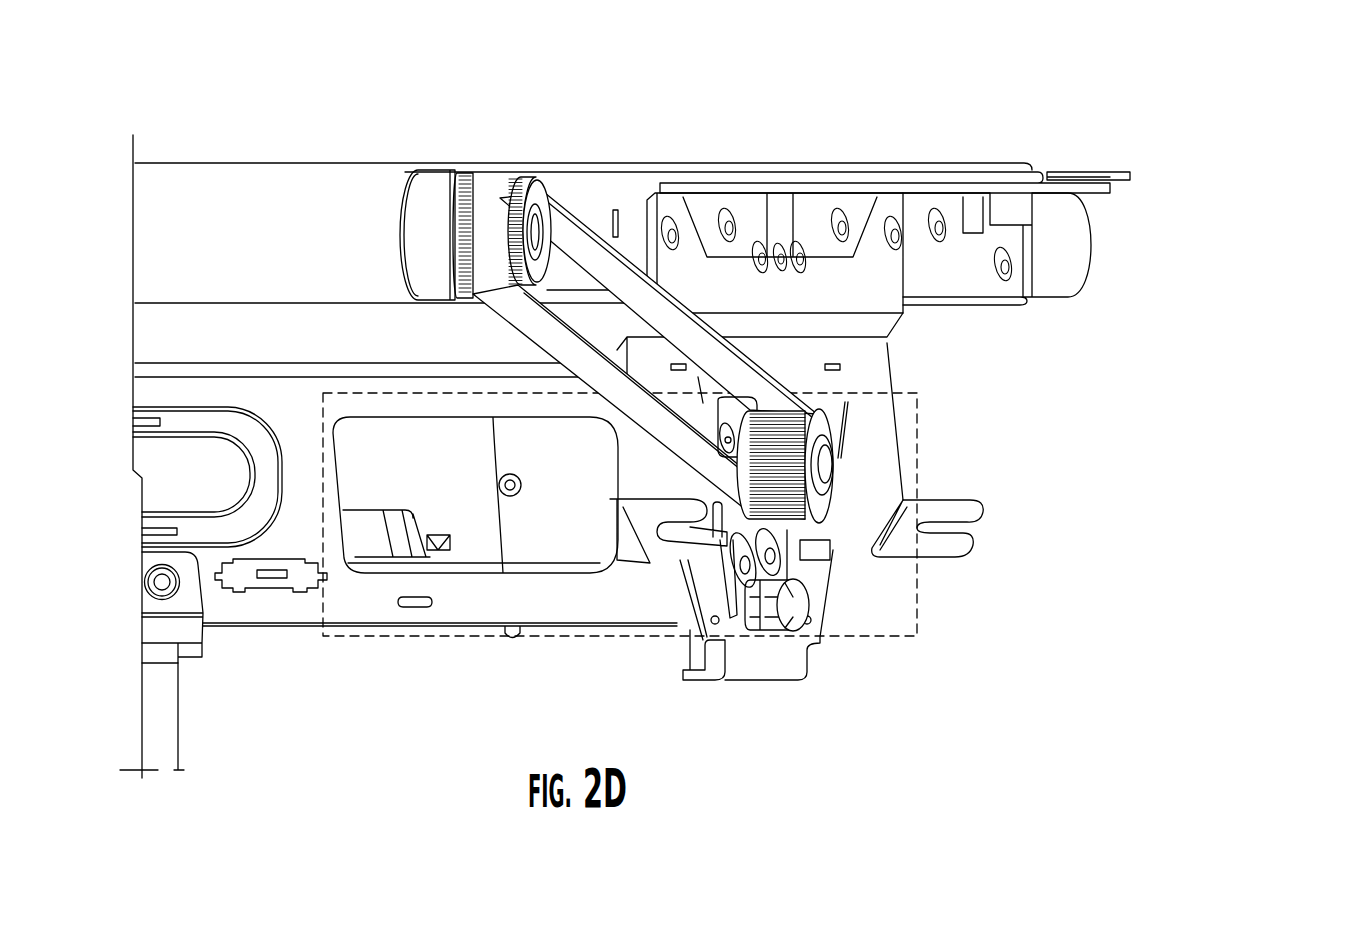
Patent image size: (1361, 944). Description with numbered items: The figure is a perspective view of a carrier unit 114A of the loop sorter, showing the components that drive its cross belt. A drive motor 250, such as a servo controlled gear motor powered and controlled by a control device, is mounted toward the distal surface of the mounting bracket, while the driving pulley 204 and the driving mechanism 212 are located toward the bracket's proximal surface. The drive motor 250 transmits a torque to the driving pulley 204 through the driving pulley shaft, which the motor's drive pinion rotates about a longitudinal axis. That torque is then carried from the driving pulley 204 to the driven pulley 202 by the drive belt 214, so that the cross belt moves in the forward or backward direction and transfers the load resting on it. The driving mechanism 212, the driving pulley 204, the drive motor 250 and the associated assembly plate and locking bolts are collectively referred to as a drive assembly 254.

The carrier unit 114A is at (1232, 192).
The driven pulley 202 is at (546, 191).
The driving pulley 204 is at (818, 494).
The driving mechanism 212 is at (765, 633).
The drive belt 214 is at (681, 472).
The drive motor 250 is at (482, 556).
The drive assembly 254 is at (930, 480).